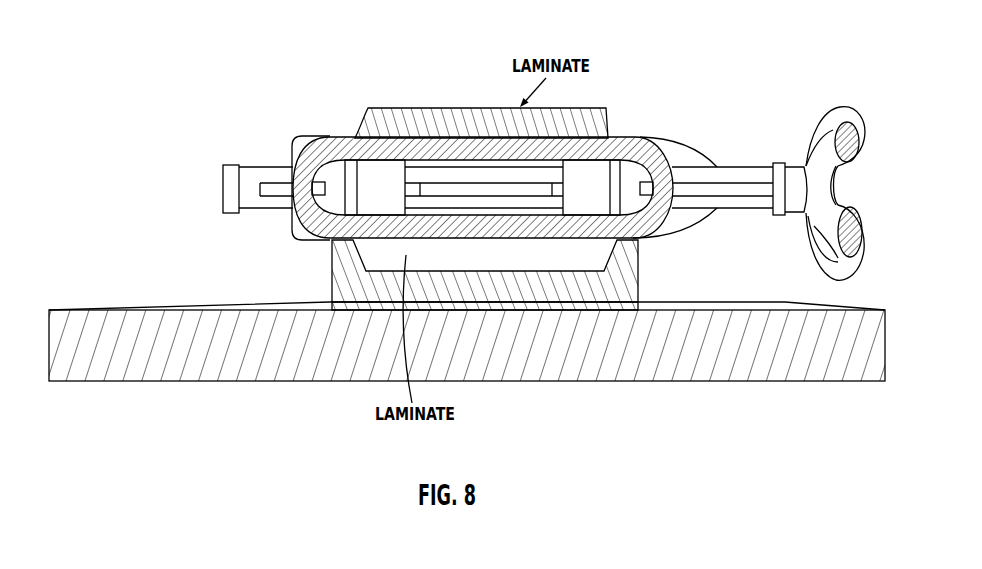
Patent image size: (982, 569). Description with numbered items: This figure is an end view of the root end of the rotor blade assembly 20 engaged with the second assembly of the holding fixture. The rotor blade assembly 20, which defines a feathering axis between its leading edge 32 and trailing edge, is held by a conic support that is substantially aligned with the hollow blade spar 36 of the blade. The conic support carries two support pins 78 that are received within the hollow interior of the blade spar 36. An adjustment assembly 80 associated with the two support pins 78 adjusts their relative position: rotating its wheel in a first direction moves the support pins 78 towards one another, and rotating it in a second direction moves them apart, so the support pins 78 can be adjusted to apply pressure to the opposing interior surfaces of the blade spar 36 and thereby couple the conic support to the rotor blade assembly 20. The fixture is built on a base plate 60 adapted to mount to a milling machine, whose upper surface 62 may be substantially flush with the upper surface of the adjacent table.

The rotor blade assembly 20 is at (699, 162).
The leading edge 32 is at (715, 211).
The blade spar 36 is at (488, 243).
The base plate 60 is at (183, 328).
The upper surface 62 is at (222, 305).
The support pin 78 is at (578, 160).
The adjustment assembly 80 is at (797, 118).